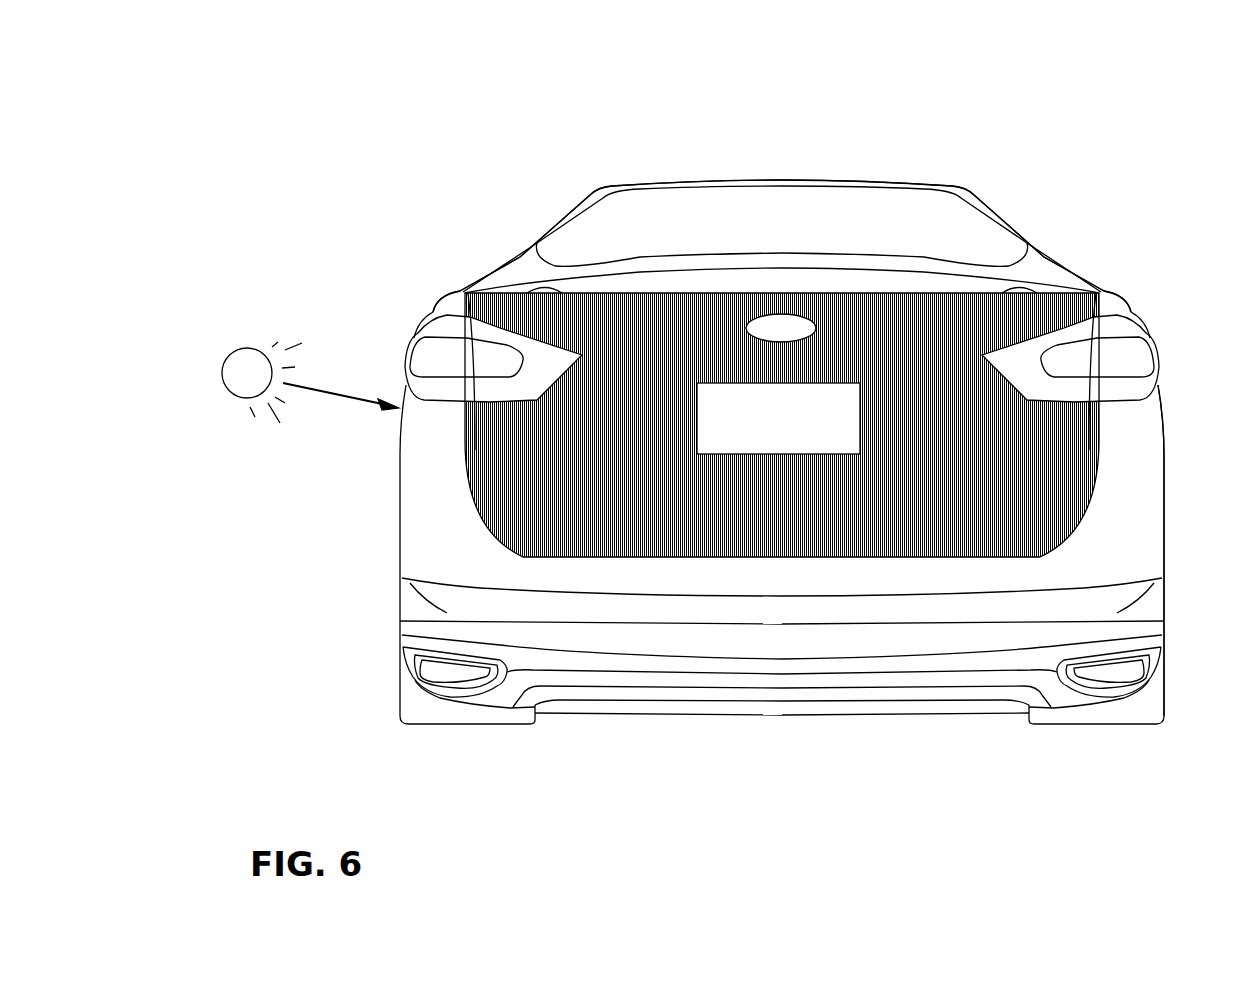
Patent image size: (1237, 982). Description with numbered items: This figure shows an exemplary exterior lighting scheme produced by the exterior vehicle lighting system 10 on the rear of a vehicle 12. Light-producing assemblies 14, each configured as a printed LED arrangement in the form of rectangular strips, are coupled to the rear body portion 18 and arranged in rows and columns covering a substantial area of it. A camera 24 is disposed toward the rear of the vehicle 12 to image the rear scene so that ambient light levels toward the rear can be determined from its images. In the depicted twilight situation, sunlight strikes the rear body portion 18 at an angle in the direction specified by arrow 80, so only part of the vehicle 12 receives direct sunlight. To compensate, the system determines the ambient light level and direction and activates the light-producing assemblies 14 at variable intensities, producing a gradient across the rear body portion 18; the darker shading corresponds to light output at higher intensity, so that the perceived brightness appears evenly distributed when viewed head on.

The exterior vehicle lighting system 10 is at (955, 95).
The vehicle 12 is at (493, 218).
The light-producing assembly 14 is at (468, 293).
The rear body portion 18 is at (1155, 528).
The camera 24 is at (797, 300).
The arrow 80 is at (325, 387).